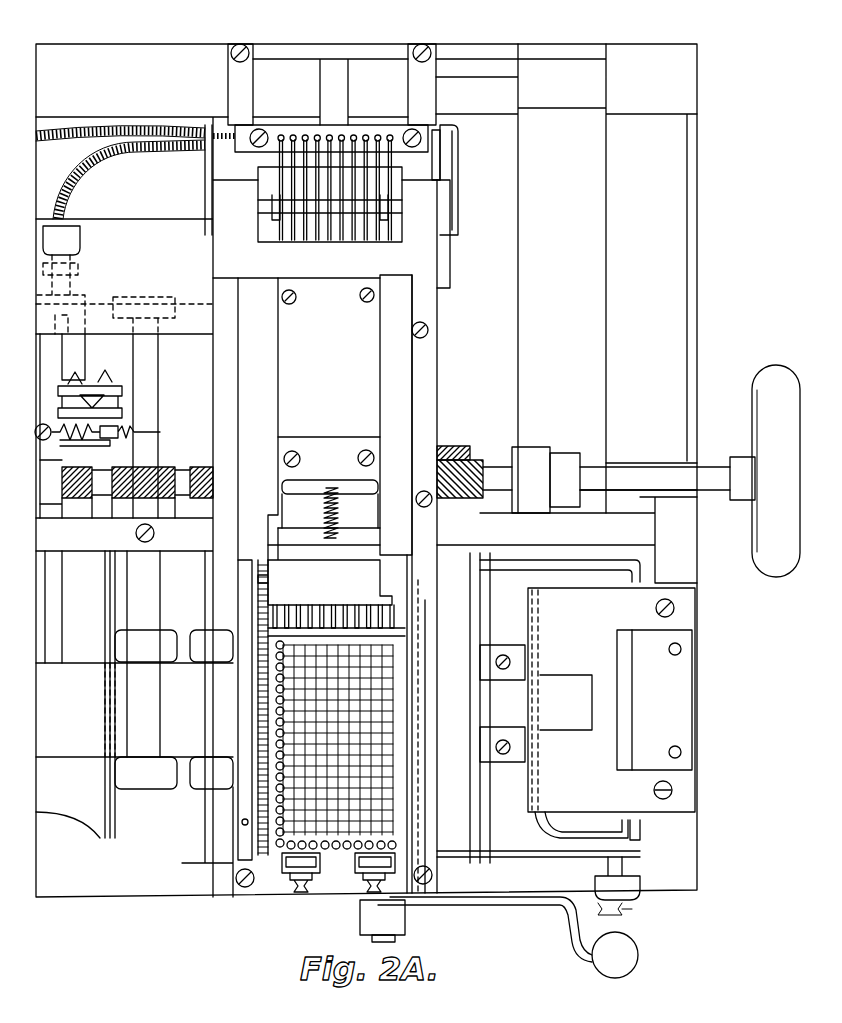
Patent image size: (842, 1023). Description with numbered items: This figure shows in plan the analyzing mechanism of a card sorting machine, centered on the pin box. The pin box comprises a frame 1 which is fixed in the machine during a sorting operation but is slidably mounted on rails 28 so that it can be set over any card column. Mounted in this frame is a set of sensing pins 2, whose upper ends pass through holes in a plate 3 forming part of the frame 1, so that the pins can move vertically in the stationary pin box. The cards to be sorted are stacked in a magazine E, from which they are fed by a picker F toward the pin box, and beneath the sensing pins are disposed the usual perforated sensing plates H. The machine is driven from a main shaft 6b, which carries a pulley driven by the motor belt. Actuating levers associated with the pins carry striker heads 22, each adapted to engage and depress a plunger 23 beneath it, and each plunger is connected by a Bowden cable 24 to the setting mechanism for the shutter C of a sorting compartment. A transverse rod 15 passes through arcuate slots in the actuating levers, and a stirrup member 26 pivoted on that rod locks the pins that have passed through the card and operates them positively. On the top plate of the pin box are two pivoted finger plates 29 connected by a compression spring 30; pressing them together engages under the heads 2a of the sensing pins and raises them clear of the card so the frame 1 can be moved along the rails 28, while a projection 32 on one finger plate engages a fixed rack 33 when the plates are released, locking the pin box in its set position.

The pin box frame 1 is at (372, 409).
The sensing pins 2 is at (393, 622).
The heads 2a is at (328, 598).
The plate 3 is at (380, 632).
The main shaft 6b is at (490, 477).
The transverse rod 15 is at (385, 210).
The striker heads 22 is at (350, 157).
The plunger 23 is at (274, 137).
The Bowden cable 24 is at (86, 172).
The stirrup member 26 is at (395, 163).
The rails 28 is at (438, 359).
The finger plates 29 is at (300, 537).
The compression spring 30 is at (344, 505).
The projection 32 is at (270, 580).
The fixed rack 33 is at (265, 850).
The shutter C is at (84, 760).
The magazine E is at (512, 833).
The picker F is at (568, 752).
The perforated sensing plates H is at (360, 815).